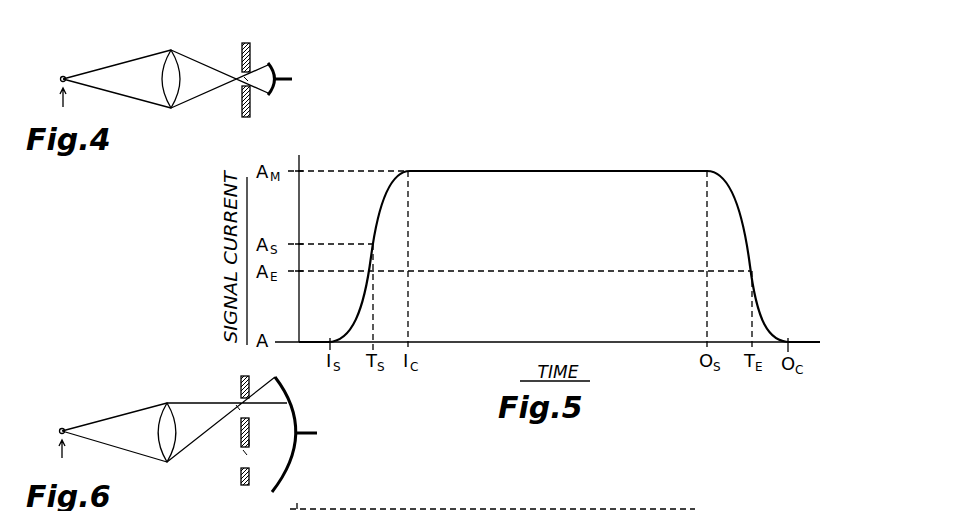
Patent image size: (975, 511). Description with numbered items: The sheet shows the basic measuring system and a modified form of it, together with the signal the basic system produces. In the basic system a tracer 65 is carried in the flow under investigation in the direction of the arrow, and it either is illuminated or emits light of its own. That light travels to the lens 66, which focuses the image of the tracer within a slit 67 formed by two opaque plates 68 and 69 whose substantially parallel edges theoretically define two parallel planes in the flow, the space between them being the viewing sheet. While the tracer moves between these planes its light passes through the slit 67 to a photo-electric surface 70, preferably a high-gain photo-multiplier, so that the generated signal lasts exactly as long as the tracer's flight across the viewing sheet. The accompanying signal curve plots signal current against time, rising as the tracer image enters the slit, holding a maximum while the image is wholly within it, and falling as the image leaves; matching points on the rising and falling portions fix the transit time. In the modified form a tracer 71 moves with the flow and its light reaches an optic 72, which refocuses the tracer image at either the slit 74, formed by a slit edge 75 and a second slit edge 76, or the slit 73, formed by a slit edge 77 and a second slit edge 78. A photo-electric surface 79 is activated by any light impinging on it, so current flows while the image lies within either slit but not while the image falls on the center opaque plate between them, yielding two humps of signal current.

In FIG. 4, the tracer 65 is at (62, 76).
In FIG. 4, the lens 66 is at (162, 61).
In FIG. 4, the slit 67 is at (241, 77).
In FIG. 4, the opaque plate 68 is at (242, 99).
In FIG. 4, the opaque plate 69 is at (243, 44).
In FIG. 4, the photo-electric surface 70 is at (271, 65).
In FIG. 6, the tracer 71 is at (61, 428).
In FIG. 6, the optic 72 is at (158, 415).
In FIG. 6, the slit 73 is at (242, 455).
In FIG. 6, the slit 74 is at (238, 409).
In FIG. 6, the slit edge 75 is at (238, 396).
In FIG. 6, the second slit edge 76 is at (250, 420).
In FIG. 6, the slit edge 77 is at (252, 451).
In FIG. 6, the second slit edge 78 is at (240, 468).
In FIG. 6, the photo-electric surface 79 is at (295, 452).